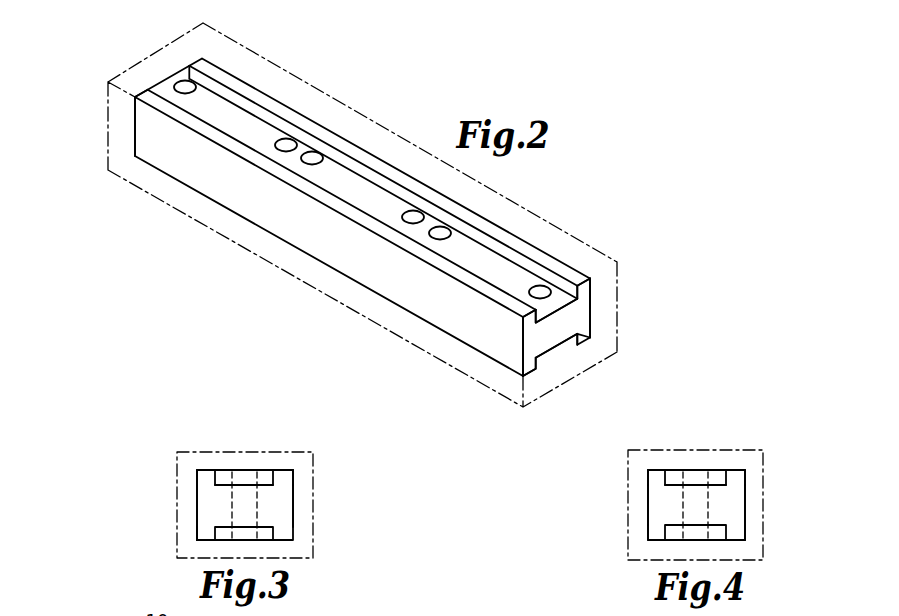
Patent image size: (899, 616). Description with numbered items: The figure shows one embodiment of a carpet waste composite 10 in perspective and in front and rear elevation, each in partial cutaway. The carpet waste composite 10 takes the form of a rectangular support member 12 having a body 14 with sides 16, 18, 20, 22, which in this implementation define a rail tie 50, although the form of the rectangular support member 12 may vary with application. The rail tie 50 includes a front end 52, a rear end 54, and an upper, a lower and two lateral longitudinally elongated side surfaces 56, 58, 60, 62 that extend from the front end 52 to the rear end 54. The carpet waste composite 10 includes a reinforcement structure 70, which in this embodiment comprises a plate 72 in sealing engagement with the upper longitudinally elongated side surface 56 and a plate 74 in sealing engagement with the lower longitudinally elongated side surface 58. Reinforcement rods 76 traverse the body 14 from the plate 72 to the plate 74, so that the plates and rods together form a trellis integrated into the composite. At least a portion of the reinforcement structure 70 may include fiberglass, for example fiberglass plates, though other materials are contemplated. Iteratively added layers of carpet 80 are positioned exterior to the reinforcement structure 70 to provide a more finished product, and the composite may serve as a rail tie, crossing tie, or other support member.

In FIG. 2, the carpet waste composite 10 is at (424, 117).
In FIG. 3, the carpet waste composite 10 is at (303, 432).
In FIG. 4, the carpet waste composite 10 is at (751, 435).
In FIG. 2, the rectangular support member 12 is at (591, 316).
In FIG. 4, the rectangular support member 12 is at (748, 525).
In FIG. 2, the body 14 is at (253, 222).
In FIG. 3, the body 14 is at (212, 518).
In FIG. 4, the body 14 is at (663, 518).
In FIG. 2, the side 16 is at (538, 257).
In FIG. 3, the side 16 is at (254, 469).
In FIG. 4, the side 16 is at (690, 469).
In FIG. 2, the side 18 is at (590, 291).
In FIG. 3, the side 18 is at (293, 474).
In FIG. 4, the side 18 is at (648, 477).
In FIG. 2, the side 20 is at (572, 350).
In FIG. 3, the side 20 is at (287, 542).
In FIG. 4, the side 20 is at (655, 542).
In FIG. 2, the side 22 is at (518, 337).
In FIG. 3, the side 22 is at (197, 492).
In FIG. 2, the rail tie 50 is at (362, 139).
In FIG. 3, the rail tie 50 is at (271, 468).
In FIG. 4, the rail tie 50 is at (671, 462).
In FIG. 2, the front end 52 is at (567, 320).
In FIG. 3, the front end 52 is at (197, 537).
In FIG. 2, the rear end 54 is at (135, 122).
In FIG. 4, the rear end 54 is at (648, 536).
In FIG. 2, the upper longitudinally elongated side surface 56 is at (515, 243).
In FIG. 3, the upper longitudinally elongated side surface 56 is at (232, 469).
In FIG. 4, the upper longitudinally elongated side surface 56 is at (707, 469).
In FIG. 2, the lower longitudinally elongated side surface 58 is at (562, 357).
In FIG. 3, the lower longitudinally elongated side surface 58 is at (202, 542).
In FIG. 4, the lower longitudinally elongated side surface 58 is at (738, 542).
In FIG. 2, the lateral longitudinally elongated side surface 60 is at (589, 283).
In FIG. 3, the lateral longitudinally elongated side surface 60 is at (293, 494).
In FIG. 4, the lateral longitudinally elongated side surface 60 is at (648, 496).
In FIG. 2, the lateral longitudinally elongated side surface 62 is at (510, 360).
In FIG. 3, the lateral longitudinally elongated side surface 62 is at (197, 476).
In FIG. 4, the lateral longitudinally elongated side surface 62 is at (745, 474).
In FIG. 2, the reinforcement structure 70 is at (237, 120).
In FIG. 3, the reinforcement structure 70 is at (260, 468).
In FIG. 4, the reinforcement structure 70 is at (679, 467).
In FIG. 2, the plate 72 is at (466, 264).
In FIG. 2, the plate 74 is at (546, 363).
In FIG. 2, the reinforcement rods 76 is at (313, 152).
In FIG. 2, the layers of carpet 80 is at (503, 197).
In FIG. 3, the layers of carpet 80 is at (313, 520).